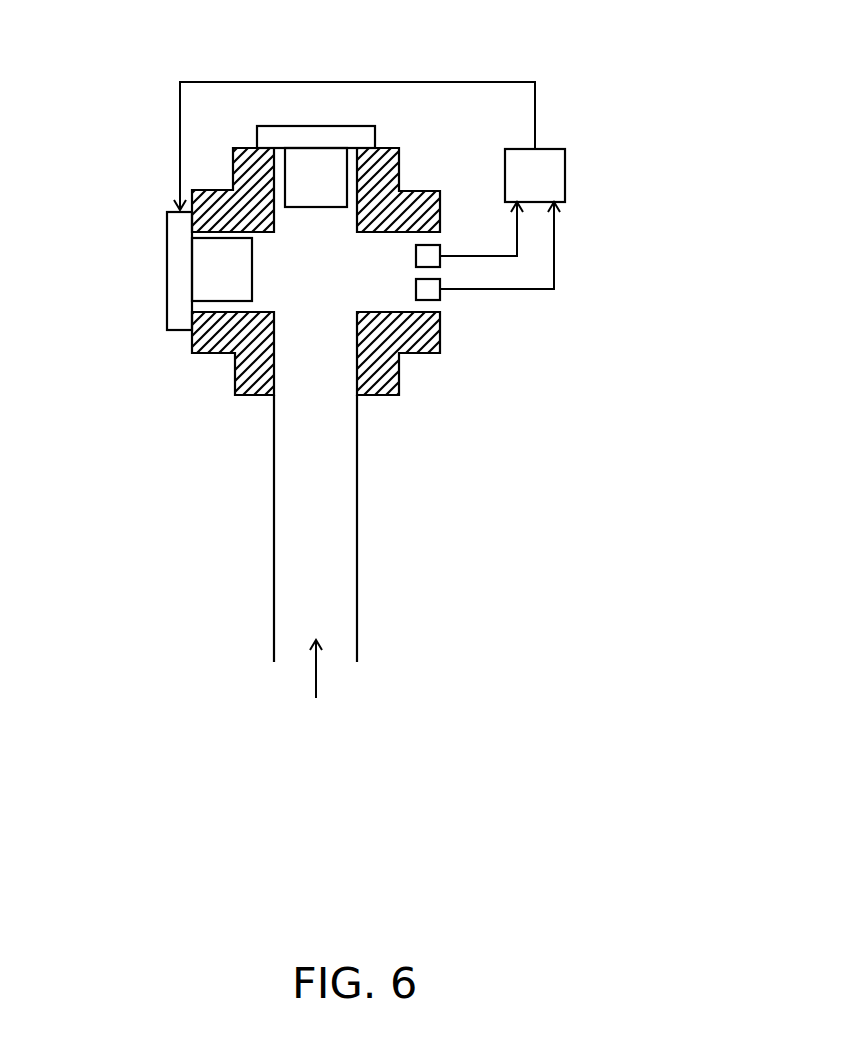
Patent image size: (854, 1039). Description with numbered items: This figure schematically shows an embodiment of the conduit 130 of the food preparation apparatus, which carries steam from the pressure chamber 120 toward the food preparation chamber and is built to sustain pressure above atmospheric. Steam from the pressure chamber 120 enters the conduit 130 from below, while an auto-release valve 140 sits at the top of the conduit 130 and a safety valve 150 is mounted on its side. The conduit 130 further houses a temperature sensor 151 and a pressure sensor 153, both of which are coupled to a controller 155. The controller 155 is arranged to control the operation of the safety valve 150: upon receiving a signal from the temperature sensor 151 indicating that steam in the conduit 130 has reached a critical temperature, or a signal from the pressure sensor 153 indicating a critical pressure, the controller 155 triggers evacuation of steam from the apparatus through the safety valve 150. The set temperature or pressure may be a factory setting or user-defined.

The pressure chamber 120 is at (316, 686).
The conduit 130 is at (347, 515).
The auto-release valve 140 is at (327, 137).
The safety valve 150 is at (175, 265).
The temperature sensor 151 is at (430, 293).
The pressure sensor 153 is at (432, 256).
The controller 155 is at (548, 178).